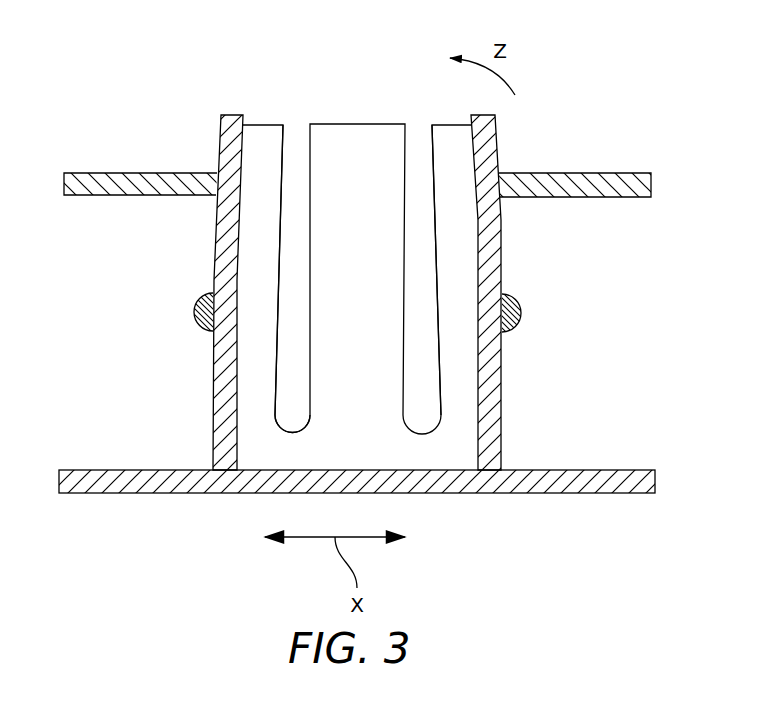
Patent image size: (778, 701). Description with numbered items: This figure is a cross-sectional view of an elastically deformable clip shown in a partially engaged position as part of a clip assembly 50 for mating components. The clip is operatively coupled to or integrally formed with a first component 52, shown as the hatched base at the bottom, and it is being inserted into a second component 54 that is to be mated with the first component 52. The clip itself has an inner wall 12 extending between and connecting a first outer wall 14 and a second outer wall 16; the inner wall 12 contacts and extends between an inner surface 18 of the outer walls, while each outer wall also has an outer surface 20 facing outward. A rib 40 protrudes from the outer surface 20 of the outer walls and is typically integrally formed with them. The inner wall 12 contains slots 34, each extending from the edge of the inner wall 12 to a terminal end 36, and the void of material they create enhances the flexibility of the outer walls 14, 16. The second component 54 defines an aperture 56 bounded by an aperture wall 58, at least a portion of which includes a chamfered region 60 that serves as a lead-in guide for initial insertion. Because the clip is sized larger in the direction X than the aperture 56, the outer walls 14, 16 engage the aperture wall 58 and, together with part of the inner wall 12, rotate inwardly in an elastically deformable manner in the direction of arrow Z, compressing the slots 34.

The inner wall 12 is at (322, 115).
The first outer wall 14 is at (210, 270).
The second outer wall 16 is at (507, 395).
The inner surface 18 is at (243, 135).
The outer surface 20 is at (498, 153).
The slot 34 is at (416, 138).
The terminal end 36 is at (310, 419).
The rib 40 is at (196, 312).
The clip assembly 50 is at (546, 80).
The first component 52 is at (183, 488).
The second component 54 is at (608, 170).
The aperture 56 is at (252, 174).
The aperture wall 58 is at (216, 180).
The chamfered region 60 is at (503, 197).